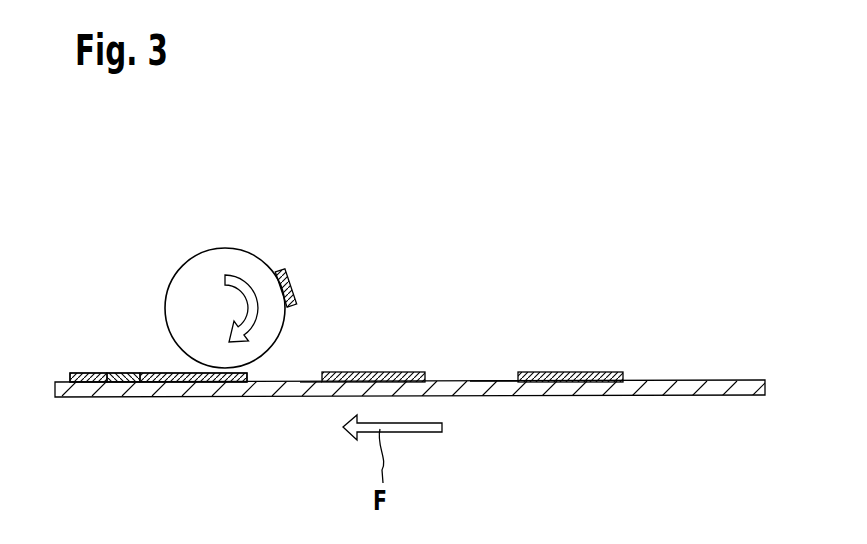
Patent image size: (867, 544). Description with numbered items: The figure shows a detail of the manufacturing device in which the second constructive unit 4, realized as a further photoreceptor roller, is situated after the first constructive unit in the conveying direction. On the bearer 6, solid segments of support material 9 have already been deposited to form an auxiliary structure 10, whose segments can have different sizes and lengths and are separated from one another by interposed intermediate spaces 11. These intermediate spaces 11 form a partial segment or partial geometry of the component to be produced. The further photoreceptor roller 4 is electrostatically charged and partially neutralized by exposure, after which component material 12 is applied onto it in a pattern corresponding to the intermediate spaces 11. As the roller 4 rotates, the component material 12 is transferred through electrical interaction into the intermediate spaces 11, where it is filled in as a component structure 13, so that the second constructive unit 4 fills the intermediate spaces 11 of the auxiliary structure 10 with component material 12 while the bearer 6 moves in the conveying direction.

The second constructive unit 4 is at (226, 262).
The bearer 6 is at (663, 386).
The support material 9 is at (406, 372).
The auxiliary structure 10 is at (397, 332).
The intermediate spaces 11 is at (318, 356).
The component material 12 is at (291, 281).
The component structure 13 is at (80, 358).